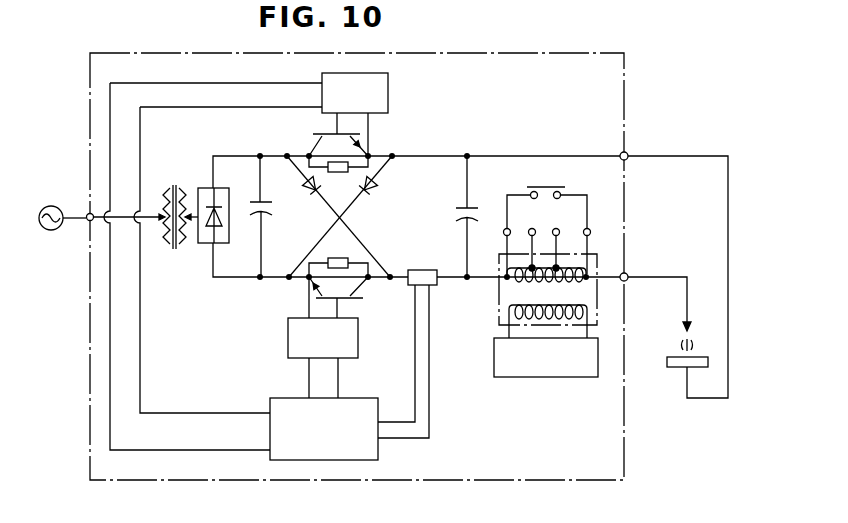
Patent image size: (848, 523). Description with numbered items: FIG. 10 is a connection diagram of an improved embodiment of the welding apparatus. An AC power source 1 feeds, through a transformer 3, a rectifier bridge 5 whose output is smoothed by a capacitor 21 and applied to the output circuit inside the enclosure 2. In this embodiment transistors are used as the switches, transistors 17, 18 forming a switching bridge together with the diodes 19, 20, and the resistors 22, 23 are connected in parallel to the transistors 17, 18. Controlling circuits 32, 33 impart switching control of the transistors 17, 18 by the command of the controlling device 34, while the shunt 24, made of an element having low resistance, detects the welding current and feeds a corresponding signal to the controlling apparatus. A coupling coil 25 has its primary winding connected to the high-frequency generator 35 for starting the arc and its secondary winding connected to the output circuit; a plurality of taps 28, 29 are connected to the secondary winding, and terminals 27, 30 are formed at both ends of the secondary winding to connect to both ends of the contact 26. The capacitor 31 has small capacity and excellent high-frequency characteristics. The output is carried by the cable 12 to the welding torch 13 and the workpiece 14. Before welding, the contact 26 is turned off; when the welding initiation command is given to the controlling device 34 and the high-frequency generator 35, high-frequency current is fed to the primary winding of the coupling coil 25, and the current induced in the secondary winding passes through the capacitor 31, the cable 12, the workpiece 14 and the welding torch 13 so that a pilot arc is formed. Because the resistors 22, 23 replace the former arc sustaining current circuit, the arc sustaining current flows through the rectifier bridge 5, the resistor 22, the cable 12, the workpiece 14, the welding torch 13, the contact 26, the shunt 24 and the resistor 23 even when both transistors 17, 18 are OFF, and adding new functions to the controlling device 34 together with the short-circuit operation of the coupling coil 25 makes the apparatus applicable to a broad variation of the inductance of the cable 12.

The AC power source 1 is at (57, 206).
The control circuit 2 is at (527, 53).
The transformer 3 is at (172, 186).
The rectifier bridge 5 is at (203, 188).
The cable 12 is at (668, 154).
The welding torch 13 is at (690, 326).
The workpiece 14 is at (672, 367).
The transistor 17 is at (308, 143).
The transistor 18 is at (355, 287).
The diode 19 is at (307, 193).
The diode 20 is at (374, 193).
The capacitor 21 is at (276, 204).
The resistor 22 is at (357, 150).
The resistor 23 is at (337, 258).
The shunt 24 is at (420, 270).
The coupling coil 25 is at (598, 310).
The contact 26 is at (545, 187).
The terminal 27 is at (590, 230).
The tap 28 is at (558, 230).
The tap 29 is at (534, 230).
The terminal 30 is at (505, 230).
The capacitor 31 is at (455, 215).
The controlling circuit 32 is at (388, 90).
The controlling circuit 33 is at (358, 337).
The controlling device 34 is at (378, 398).
The high-frequency generator 35 is at (543, 377).